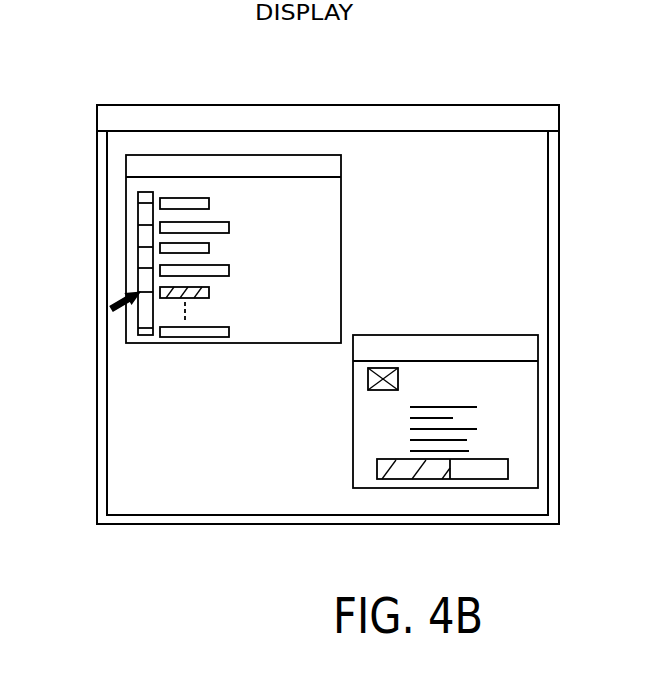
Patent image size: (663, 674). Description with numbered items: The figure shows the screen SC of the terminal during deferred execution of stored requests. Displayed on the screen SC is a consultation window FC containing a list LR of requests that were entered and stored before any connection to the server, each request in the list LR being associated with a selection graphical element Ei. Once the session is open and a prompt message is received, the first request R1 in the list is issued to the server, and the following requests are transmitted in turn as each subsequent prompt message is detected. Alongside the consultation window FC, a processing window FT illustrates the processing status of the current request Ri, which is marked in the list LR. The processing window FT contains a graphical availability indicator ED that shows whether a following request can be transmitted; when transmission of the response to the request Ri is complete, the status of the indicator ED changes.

The screen SC is at (468, 99).
The consultation window FC is at (350, 201).
The list of requests LR is at (232, 248).
The current request Ri is at (210, 296).
The selection graphical element Ei is at (147, 289).
The processing window FT is at (445, 366).
The first request R1 is at (447, 349).
The graphical availability indicator ED is at (367, 382).